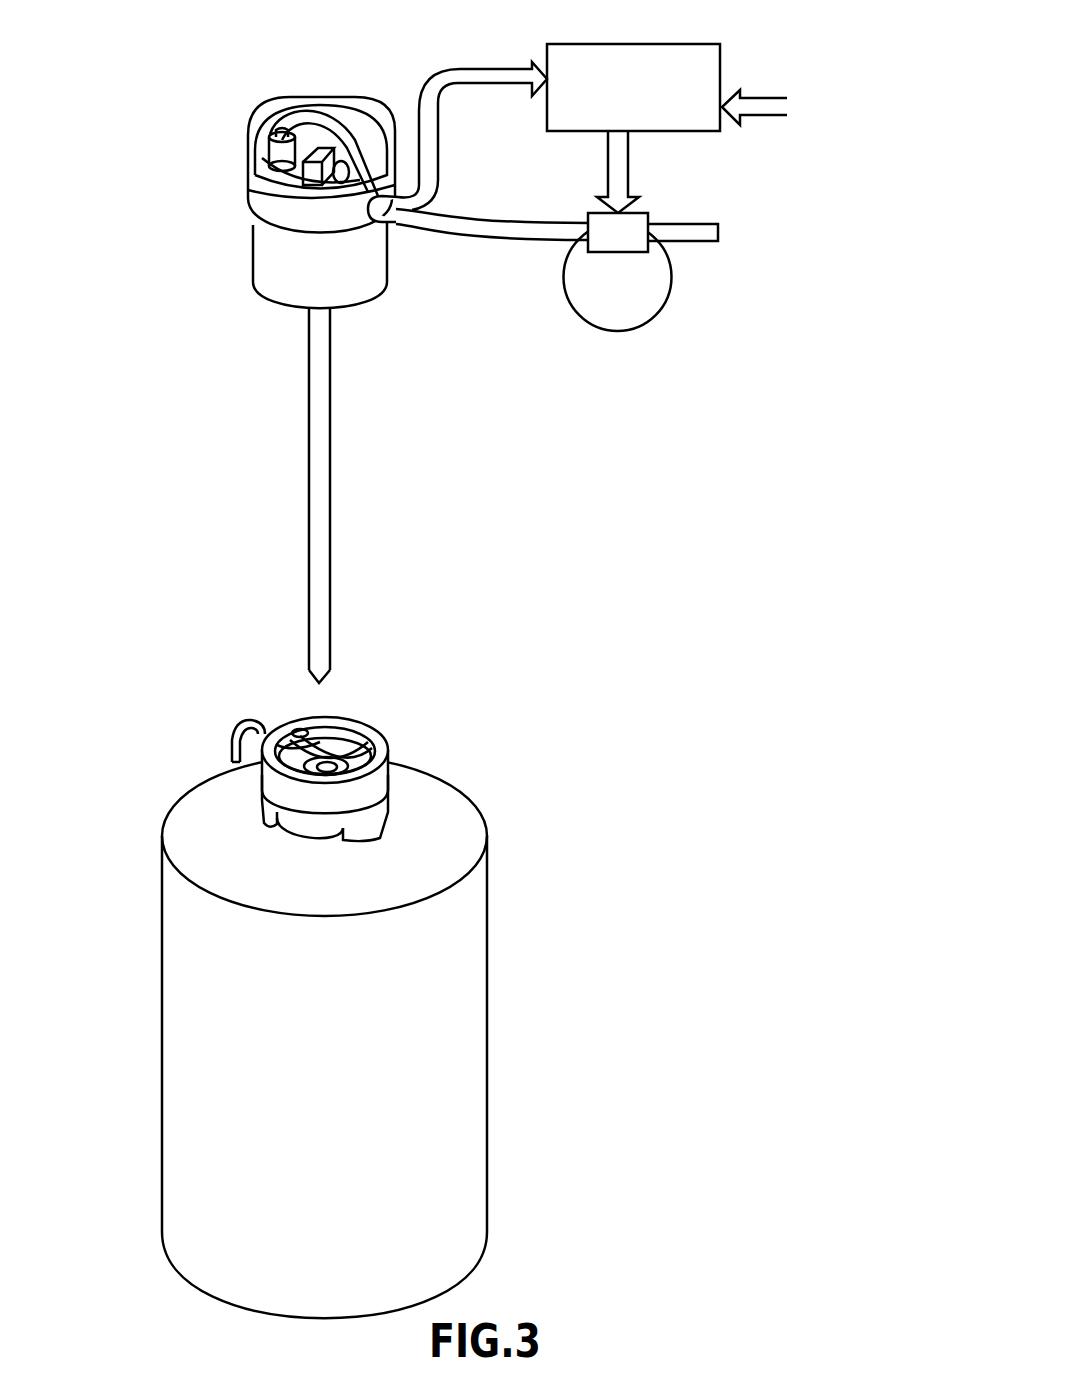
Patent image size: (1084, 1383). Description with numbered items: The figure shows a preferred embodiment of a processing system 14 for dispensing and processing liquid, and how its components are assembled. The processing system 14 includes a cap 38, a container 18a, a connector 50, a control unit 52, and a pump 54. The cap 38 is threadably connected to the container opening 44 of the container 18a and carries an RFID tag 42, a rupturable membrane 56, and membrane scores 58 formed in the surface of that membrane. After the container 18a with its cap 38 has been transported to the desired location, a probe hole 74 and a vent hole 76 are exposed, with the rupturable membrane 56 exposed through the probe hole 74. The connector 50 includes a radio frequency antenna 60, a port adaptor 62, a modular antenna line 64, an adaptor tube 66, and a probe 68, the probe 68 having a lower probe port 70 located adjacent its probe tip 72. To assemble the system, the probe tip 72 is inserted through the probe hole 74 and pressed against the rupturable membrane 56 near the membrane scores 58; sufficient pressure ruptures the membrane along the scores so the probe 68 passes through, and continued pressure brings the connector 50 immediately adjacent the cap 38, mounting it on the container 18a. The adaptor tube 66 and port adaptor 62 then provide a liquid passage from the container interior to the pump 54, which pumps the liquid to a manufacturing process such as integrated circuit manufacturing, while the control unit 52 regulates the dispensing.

The processing system 14 is at (281, 373).
The container 18a is at (492, 1042).
The cap 38 is at (352, 774).
The RFID tag 42 is at (284, 731).
The container opening 44 is at (297, 829).
The connector 50 is at (276, 186).
The control unit 52 is at (700, 34).
The pump 54 is at (664, 314).
The rupturable membrane 56 is at (345, 738).
The membrane scores 58 is at (301, 728).
The radio frequency antenna 60 is at (270, 130).
The port adaptor 62 is at (343, 142).
The modular antenna line 64 is at (433, 76).
The adaptor tube 66 is at (505, 228).
The probe 68 is at (330, 495).
The lower probe port 70 is at (312, 656).
The probe tip 72 is at (312, 668).
The probe hole 74 is at (331, 758).
The vent hole 76 is at (362, 790).